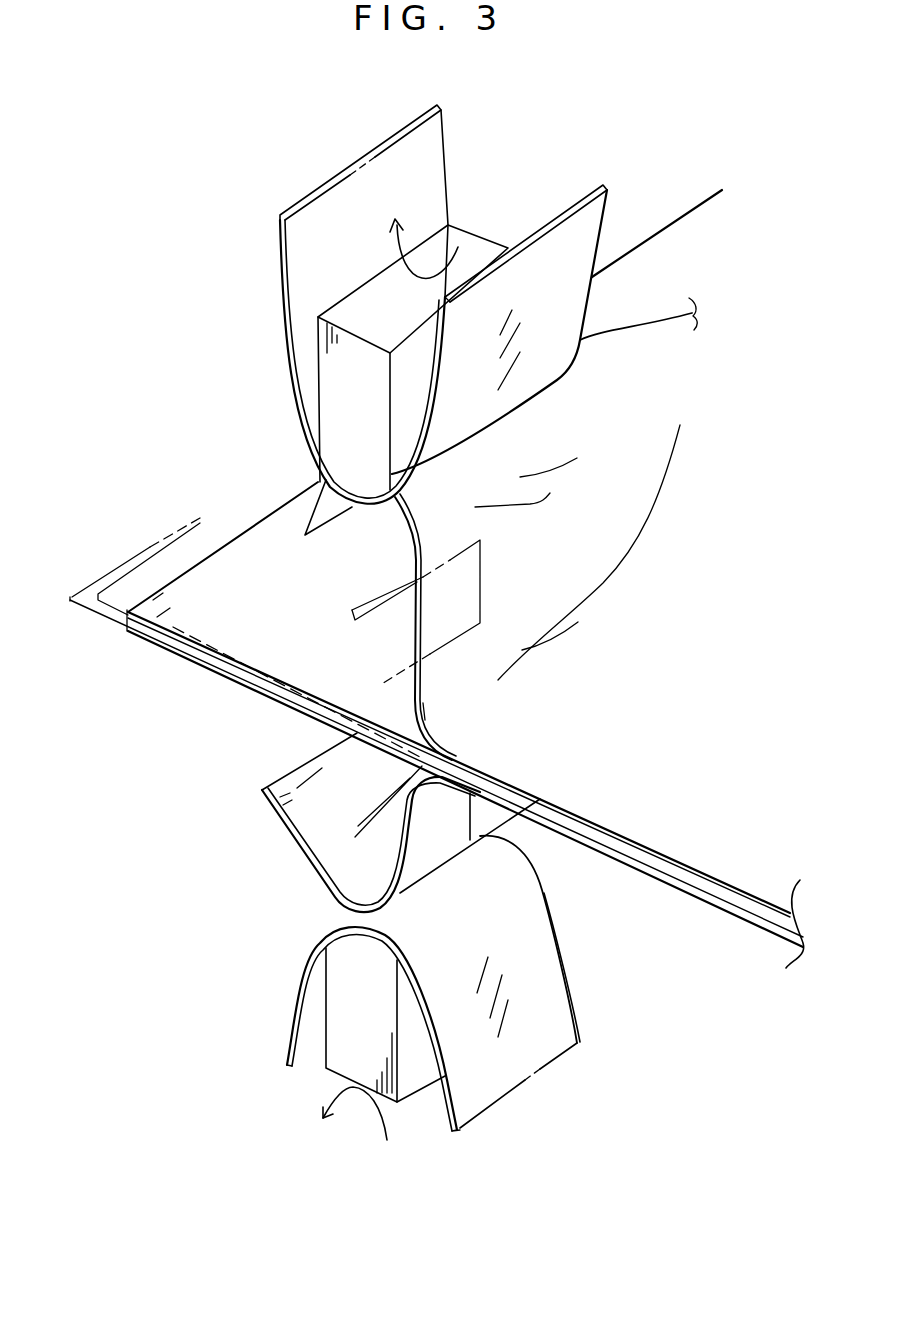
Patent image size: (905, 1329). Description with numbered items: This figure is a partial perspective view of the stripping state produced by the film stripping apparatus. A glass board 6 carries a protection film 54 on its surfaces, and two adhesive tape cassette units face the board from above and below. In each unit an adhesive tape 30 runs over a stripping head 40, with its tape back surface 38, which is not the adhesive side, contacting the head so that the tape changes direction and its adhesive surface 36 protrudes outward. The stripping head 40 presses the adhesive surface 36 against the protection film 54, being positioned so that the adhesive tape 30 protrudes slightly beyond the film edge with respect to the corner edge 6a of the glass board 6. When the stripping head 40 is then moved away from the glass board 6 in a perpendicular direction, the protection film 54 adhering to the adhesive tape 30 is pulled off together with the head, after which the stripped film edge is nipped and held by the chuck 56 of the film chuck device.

The glass board 6 is at (272, 530).
The corner edge 6a is at (220, 557).
The adhesive tape 30 is at (380, 142).
The adhesive surface 36 is at (551, 301).
The tape back surface 38 is at (307, 228).
The stripping head 40 is at (472, 252).
The protection film 54 is at (315, 480).
The chuck 56 is at (372, 608).